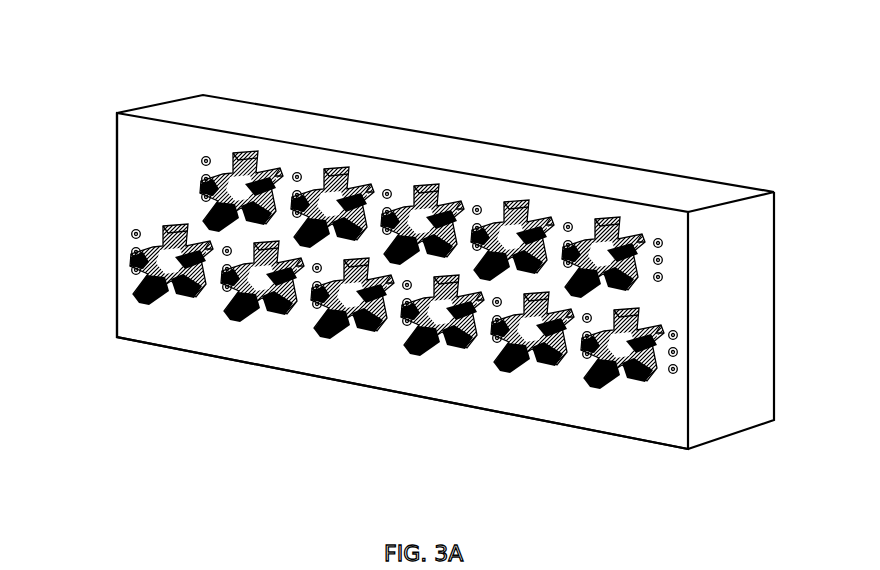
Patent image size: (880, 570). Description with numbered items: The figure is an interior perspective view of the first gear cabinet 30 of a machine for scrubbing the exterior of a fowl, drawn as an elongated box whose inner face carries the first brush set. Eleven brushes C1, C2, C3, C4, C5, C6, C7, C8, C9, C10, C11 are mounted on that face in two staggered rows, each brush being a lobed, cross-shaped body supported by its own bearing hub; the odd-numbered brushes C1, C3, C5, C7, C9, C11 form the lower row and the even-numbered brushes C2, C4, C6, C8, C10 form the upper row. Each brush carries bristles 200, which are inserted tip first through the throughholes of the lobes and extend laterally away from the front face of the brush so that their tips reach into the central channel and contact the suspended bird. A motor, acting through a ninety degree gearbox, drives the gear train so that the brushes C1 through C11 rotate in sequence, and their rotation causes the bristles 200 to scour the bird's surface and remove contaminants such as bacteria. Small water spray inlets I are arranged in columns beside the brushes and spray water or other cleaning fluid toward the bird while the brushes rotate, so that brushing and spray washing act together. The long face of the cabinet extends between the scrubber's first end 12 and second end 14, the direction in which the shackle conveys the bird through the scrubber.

The first gear cabinet 30 is at (759, 107).
The first end 12 is at (680, 387).
The second end 14 is at (127, 321).
The bristles 200 is at (135, 262).
The water spray inlets I is at (297, 172).
The brush C1 is at (652, 378).
The brush C2 is at (598, 220).
The brush C3 is at (520, 365).
The brush C4 is at (507, 203).
The brush C5 is at (473, 347).
The brush C6 is at (420, 190).
The brush C7 is at (380, 332).
The brush C8 is at (330, 176).
The brush C9 is at (290, 318).
The brush C10 is at (222, 160).
The brush C11 is at (205, 300).